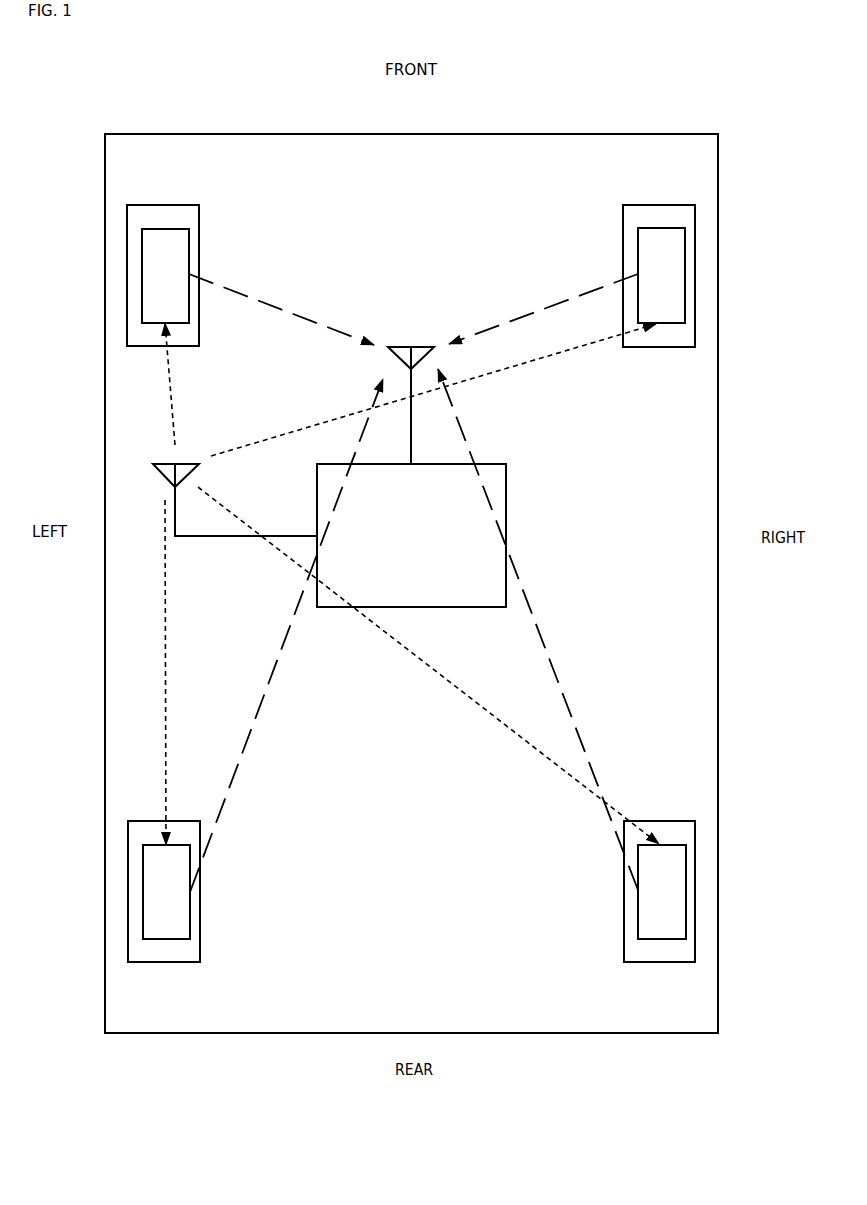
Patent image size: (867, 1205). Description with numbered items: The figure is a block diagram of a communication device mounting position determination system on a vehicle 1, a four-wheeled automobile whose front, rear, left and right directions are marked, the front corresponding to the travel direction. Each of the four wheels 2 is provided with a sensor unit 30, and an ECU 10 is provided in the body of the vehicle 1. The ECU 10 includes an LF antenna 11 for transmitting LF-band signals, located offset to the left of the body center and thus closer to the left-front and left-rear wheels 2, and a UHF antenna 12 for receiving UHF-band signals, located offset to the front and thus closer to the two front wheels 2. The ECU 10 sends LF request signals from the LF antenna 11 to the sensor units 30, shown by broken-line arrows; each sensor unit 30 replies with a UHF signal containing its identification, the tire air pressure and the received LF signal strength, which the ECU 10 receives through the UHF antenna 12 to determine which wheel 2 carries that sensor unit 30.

The vehicle 1 is at (656, 134).
The wheel 2 is at (169, 205).
The sensor unit 30 is at (142, 248).
The ECU 10 is at (487, 464).
The LF antenna 11 is at (167, 464).
The UHF antenna 12 is at (413, 347).